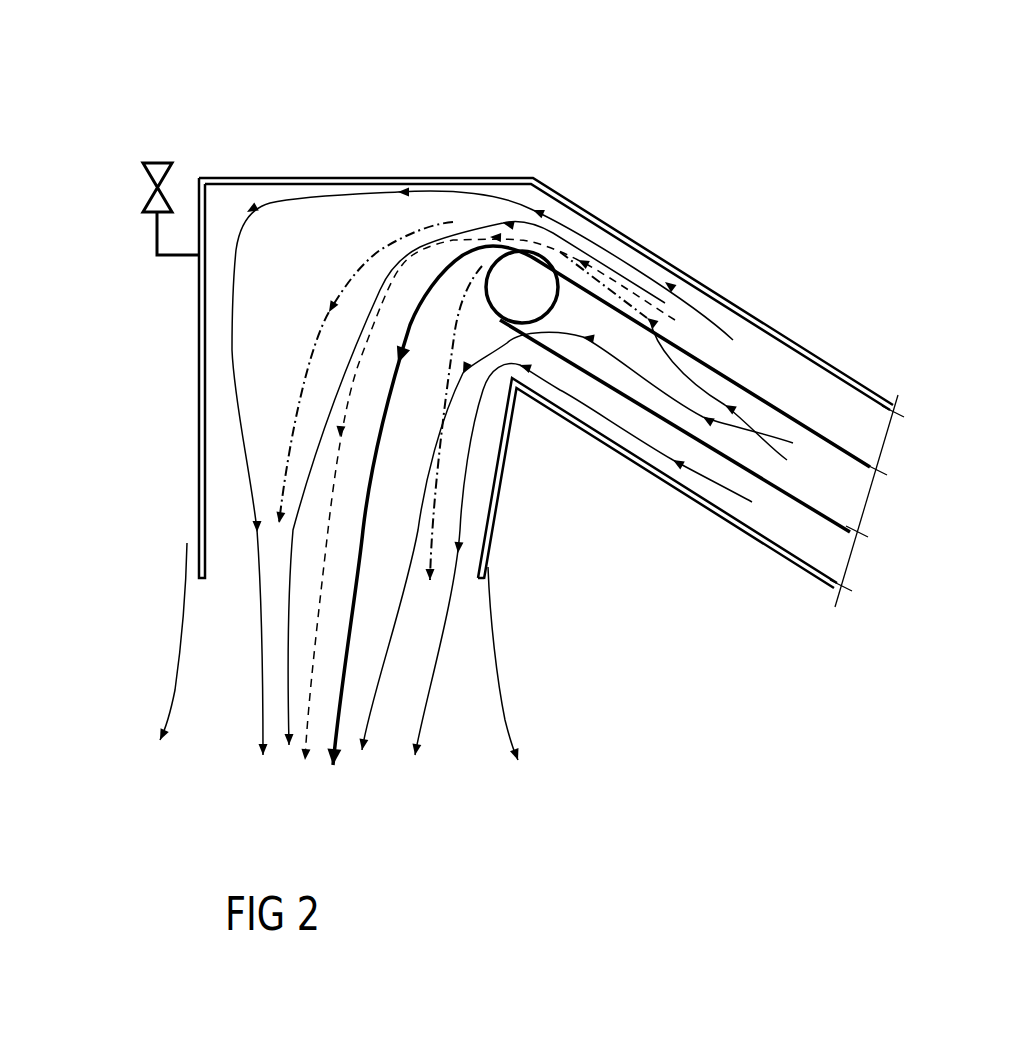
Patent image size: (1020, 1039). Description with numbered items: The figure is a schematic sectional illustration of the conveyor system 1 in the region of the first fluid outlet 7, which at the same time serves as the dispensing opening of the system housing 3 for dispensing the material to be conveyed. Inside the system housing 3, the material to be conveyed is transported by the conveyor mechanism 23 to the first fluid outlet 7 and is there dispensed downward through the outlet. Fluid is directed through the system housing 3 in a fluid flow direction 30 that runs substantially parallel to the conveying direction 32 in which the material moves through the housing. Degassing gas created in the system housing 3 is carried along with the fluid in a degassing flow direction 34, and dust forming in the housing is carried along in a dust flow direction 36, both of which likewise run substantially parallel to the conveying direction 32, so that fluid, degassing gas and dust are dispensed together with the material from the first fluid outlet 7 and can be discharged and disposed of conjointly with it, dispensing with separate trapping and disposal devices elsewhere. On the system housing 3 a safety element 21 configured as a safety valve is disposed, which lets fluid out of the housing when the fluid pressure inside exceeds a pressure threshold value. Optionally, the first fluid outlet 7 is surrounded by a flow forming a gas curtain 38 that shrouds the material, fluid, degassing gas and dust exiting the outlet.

The conveyor system 1 is at (244, 104).
The system housing 3 is at (655, 248).
The first fluid outlet 7 is at (227, 575).
The safety element 21 is at (150, 178).
The conveyor mechanism 23 is at (779, 392).
The fluid flow direction 30 is at (302, 195).
The conveying direction 32 is at (343, 657).
The degassing flow direction 34 is at (552, 247).
The dust flow direction 36 is at (421, 227).
The gas curtain 38 is at (178, 676).